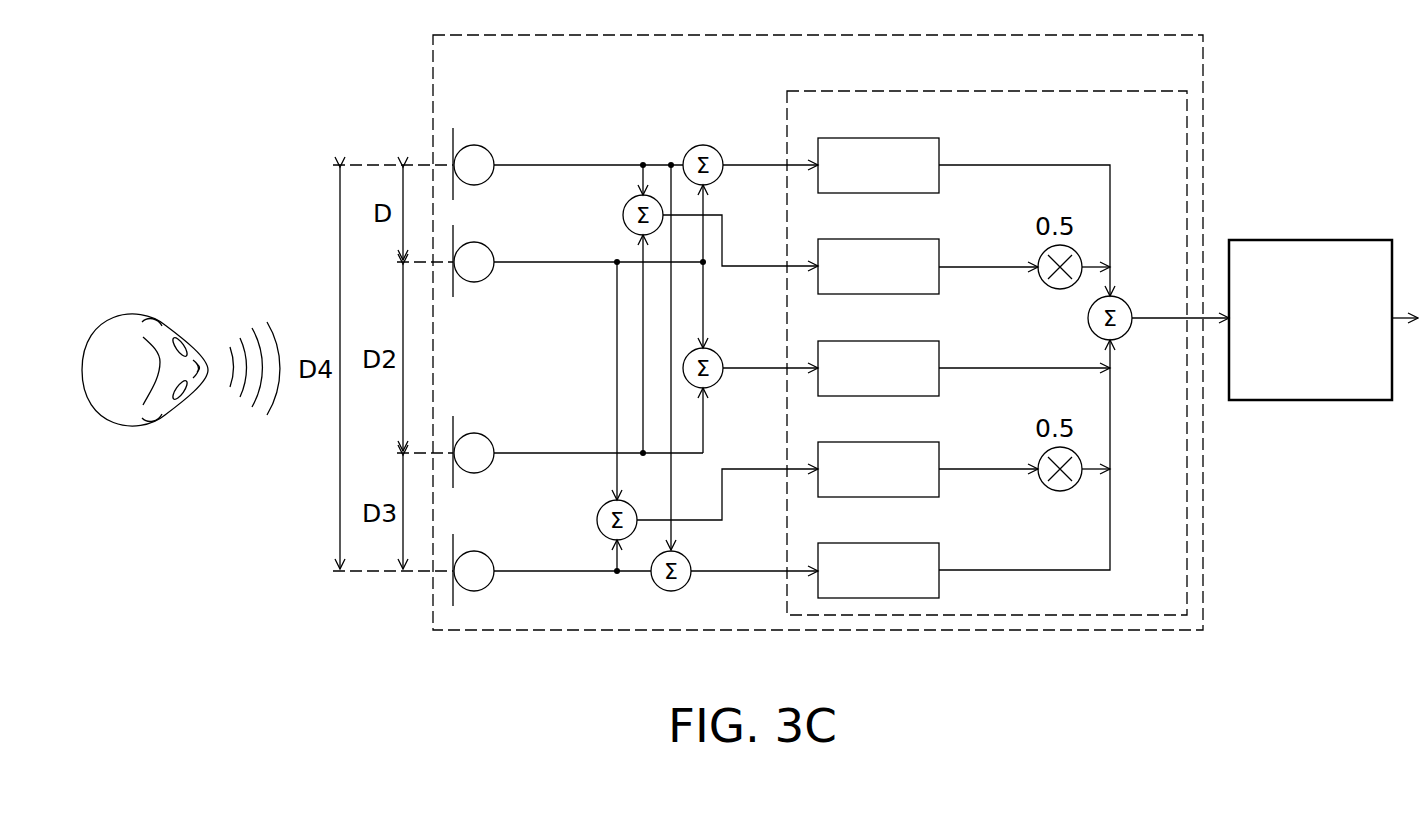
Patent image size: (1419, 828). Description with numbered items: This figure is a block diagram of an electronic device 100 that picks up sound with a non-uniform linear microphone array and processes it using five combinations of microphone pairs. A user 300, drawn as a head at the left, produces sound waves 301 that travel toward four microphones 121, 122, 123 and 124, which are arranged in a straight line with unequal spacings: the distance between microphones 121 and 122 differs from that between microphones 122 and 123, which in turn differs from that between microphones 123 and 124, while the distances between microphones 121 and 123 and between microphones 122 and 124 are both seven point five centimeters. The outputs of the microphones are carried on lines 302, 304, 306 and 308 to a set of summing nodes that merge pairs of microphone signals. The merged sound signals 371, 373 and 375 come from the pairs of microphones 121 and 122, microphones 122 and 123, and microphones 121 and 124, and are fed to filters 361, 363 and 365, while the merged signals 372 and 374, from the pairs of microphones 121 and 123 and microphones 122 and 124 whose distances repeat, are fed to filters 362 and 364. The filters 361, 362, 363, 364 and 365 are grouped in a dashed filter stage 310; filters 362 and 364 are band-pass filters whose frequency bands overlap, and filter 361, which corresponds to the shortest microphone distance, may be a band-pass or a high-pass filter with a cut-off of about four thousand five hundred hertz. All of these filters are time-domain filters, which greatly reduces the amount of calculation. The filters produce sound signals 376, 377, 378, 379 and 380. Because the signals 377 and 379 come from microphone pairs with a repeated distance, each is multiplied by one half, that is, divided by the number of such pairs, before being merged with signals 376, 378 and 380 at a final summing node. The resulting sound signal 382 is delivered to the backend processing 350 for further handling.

The electronic device 100 is at (434, 35).
The microphone 121 is at (474, 145).
The microphone 122 is at (474, 242).
The microphone 123 is at (474, 433).
The microphone 124 is at (474, 551).
The user head 300 is at (122, 320).
The sound waves 301 is at (248, 335).
The first microphone signal 302 is at (535, 167).
The second microphone signal 304 is at (535, 264).
The third microphone signal 306 is at (535, 455).
The fourth microphone signal 308 is at (535, 573).
The signal processing block 310 is at (789, 91).
The backend processing 350 is at (1232, 240).
The filter 361 is at (941, 148).
The filter 362 is at (941, 249).
The filter 363 is at (941, 350).
The filter 364 is at (941, 450).
The filter 365 is at (941, 550).
The sound signal 371 is at (753, 160).
The second summed signal 372 is at (753, 262).
The sound signal 373 is at (753, 363).
The fourth summed signal 374 is at (753, 465).
The sound signal 375 is at (753, 568).
The sound signal 376 is at (950, 167).
The sound signal 377 is at (950, 269).
The sound signal 378 is at (950, 370).
The sound signal 379 is at (950, 471).
The sound signal 380 is at (950, 572).
The sound signal 382 is at (1155, 316).